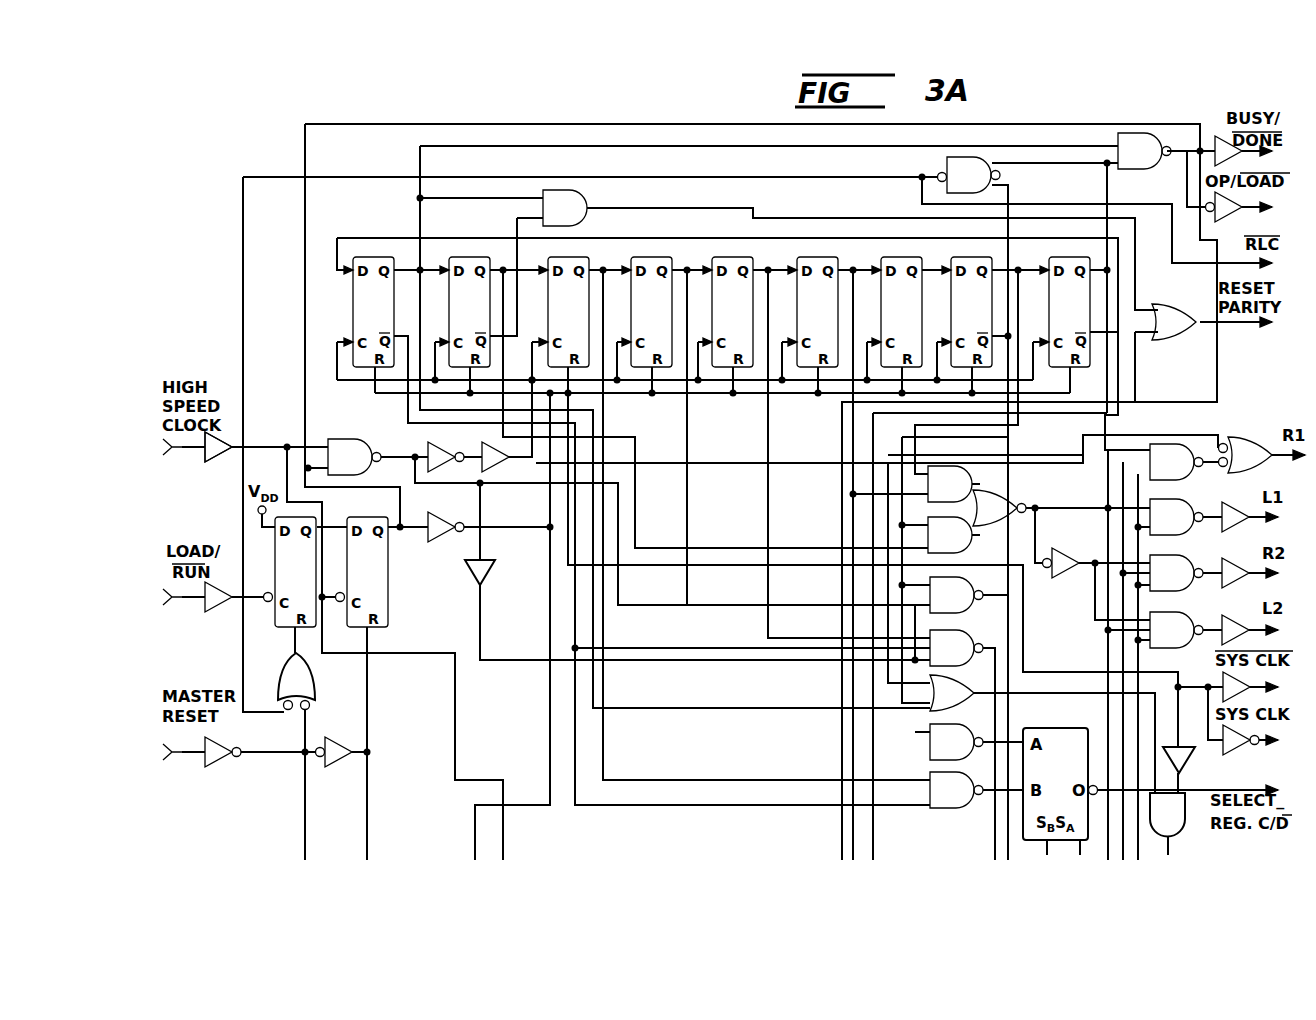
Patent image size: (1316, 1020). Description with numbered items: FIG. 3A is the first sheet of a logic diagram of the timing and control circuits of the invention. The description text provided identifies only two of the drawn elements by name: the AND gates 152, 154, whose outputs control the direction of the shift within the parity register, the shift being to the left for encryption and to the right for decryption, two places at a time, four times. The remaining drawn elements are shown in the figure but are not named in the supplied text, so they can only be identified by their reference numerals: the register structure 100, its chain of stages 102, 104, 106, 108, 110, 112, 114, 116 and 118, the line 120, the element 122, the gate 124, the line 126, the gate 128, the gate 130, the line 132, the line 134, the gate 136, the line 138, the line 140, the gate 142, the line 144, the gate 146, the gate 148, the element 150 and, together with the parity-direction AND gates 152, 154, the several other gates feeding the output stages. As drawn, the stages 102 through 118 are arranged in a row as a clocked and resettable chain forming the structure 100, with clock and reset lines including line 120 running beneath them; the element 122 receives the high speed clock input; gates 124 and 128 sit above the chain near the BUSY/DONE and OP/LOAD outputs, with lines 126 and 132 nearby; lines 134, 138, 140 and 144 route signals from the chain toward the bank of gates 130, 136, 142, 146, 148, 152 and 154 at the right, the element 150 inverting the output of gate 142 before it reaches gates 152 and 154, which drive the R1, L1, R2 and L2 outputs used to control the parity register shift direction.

The shift register 100 is at (752, 434).
The flip-flop 102 is at (389, 311).
The flip-flop 104 is at (485, 311).
The flip-flop 106 is at (584, 311).
The flip-flop 108 is at (667, 311).
The flip-flop 110 is at (748, 311).
The flip-flop 112 is at (833, 311).
The flip-flop 114 is at (917, 311).
The flip-flop 116 is at (987, 311).
The flip-flop 118 is at (1085, 311).
The reset line 120 is at (624, 398).
The high speed clock input buffer 122 is at (190, 455).
The NAND gate 124 is at (947, 163).
The line 126 is at (1002, 202).
The NAND gate 128 is at (1045, 161).
The AND gate 130 is at (968, 472).
The line 132 is at (1118, 390).
The line 134 is at (848, 425).
The AND gate 136 is at (968, 545).
The line 138 is at (1020, 437).
The line 140 is at (836, 548).
The NOR gate 142 is at (1012, 498).
The output line 144 is at (1048, 506).
The NAND gate 146 is at (1163, 443).
The NAND gate 148 is at (1165, 498).
The inverter 150 is at (1070, 551).
The AND gate 152 is at (1165, 554).
The AND gate 154 is at (1165, 611).